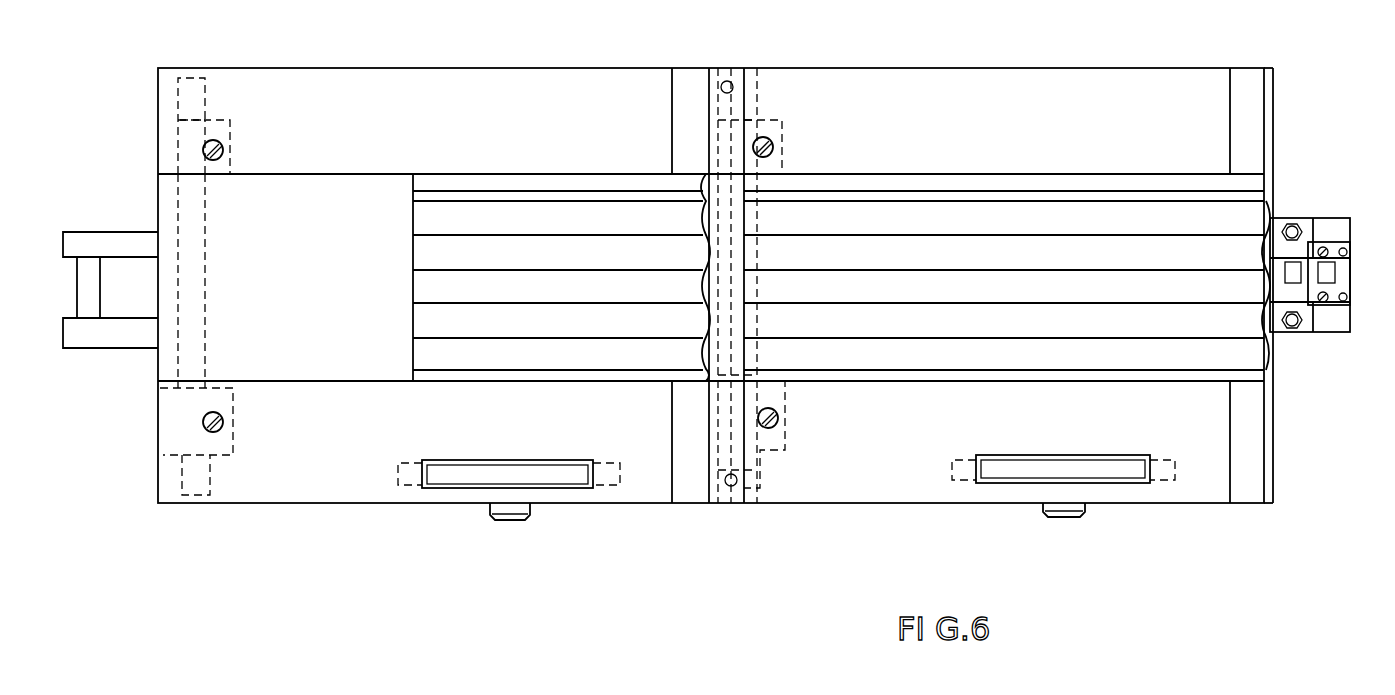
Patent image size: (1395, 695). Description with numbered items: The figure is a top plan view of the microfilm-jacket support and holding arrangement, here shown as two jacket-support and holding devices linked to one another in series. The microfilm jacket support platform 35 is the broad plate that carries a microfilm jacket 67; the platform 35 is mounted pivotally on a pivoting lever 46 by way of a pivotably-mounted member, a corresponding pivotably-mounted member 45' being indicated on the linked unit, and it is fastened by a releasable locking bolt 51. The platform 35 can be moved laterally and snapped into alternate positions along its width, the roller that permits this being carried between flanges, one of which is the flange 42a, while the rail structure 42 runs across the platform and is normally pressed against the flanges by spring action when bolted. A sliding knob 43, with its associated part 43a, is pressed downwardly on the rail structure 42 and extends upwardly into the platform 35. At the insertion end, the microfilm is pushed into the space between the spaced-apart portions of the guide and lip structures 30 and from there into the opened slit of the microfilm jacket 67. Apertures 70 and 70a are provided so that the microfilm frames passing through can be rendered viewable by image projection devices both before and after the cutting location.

The guide and lip structures 30 is at (1295, 262).
The microfilm jacket support platform 35 is at (420, 138).
The rail structure 42 is at (742, 78).
The flange 42a is at (728, 80).
The sliding knob 43 is at (562, 490).
The bracket slot 43a is at (443, 475).
The fastener block 45' is at (222, 127).
The pivoting lever 46 is at (198, 88).
The releasable locking bolt 51 is at (512, 510).
The microfilm jacket 67 is at (430, 253).
The aperture 70 is at (1324, 268).
The aperture 70a is at (1343, 248).